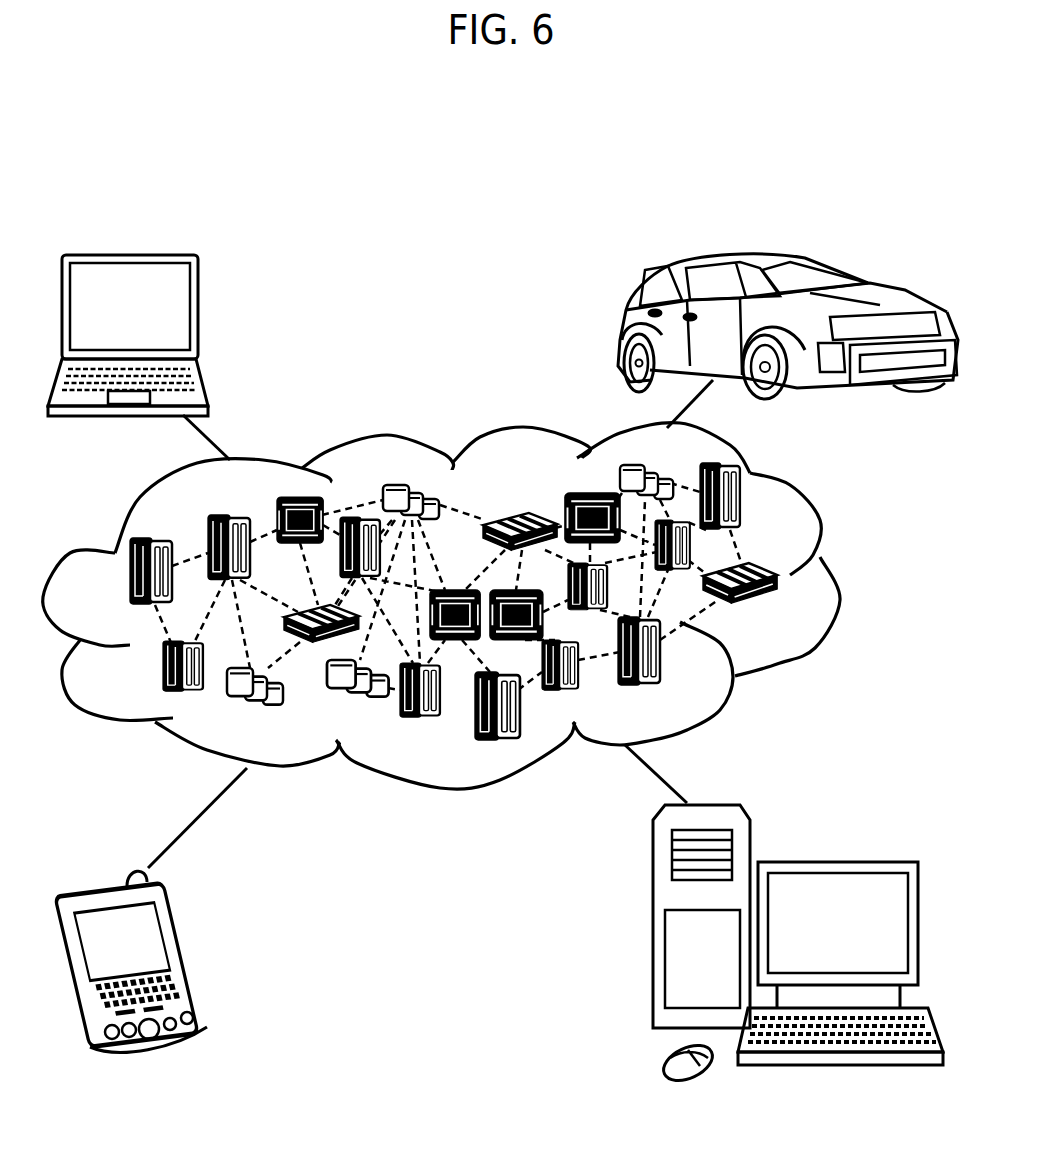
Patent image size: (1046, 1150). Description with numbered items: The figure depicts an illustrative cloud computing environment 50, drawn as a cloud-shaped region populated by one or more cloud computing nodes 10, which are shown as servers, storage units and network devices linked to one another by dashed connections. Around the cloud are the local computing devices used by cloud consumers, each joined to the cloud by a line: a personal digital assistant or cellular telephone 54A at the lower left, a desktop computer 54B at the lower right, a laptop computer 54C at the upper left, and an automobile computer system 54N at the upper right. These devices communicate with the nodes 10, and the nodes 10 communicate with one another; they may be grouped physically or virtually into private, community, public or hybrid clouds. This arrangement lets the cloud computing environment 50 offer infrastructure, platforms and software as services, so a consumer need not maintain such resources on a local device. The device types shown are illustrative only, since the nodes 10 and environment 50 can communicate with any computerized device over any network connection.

The cloud computing nodes 10 is at (505, 601).
The cloud computing environment 50 is at (838, 578).
The personal digital assistant or cellular telephone 54A is at (197, 951).
The desktop computer 54B is at (837, 862).
The laptop computer 54C is at (199, 315).
The automobile computer system 54N is at (622, 332).